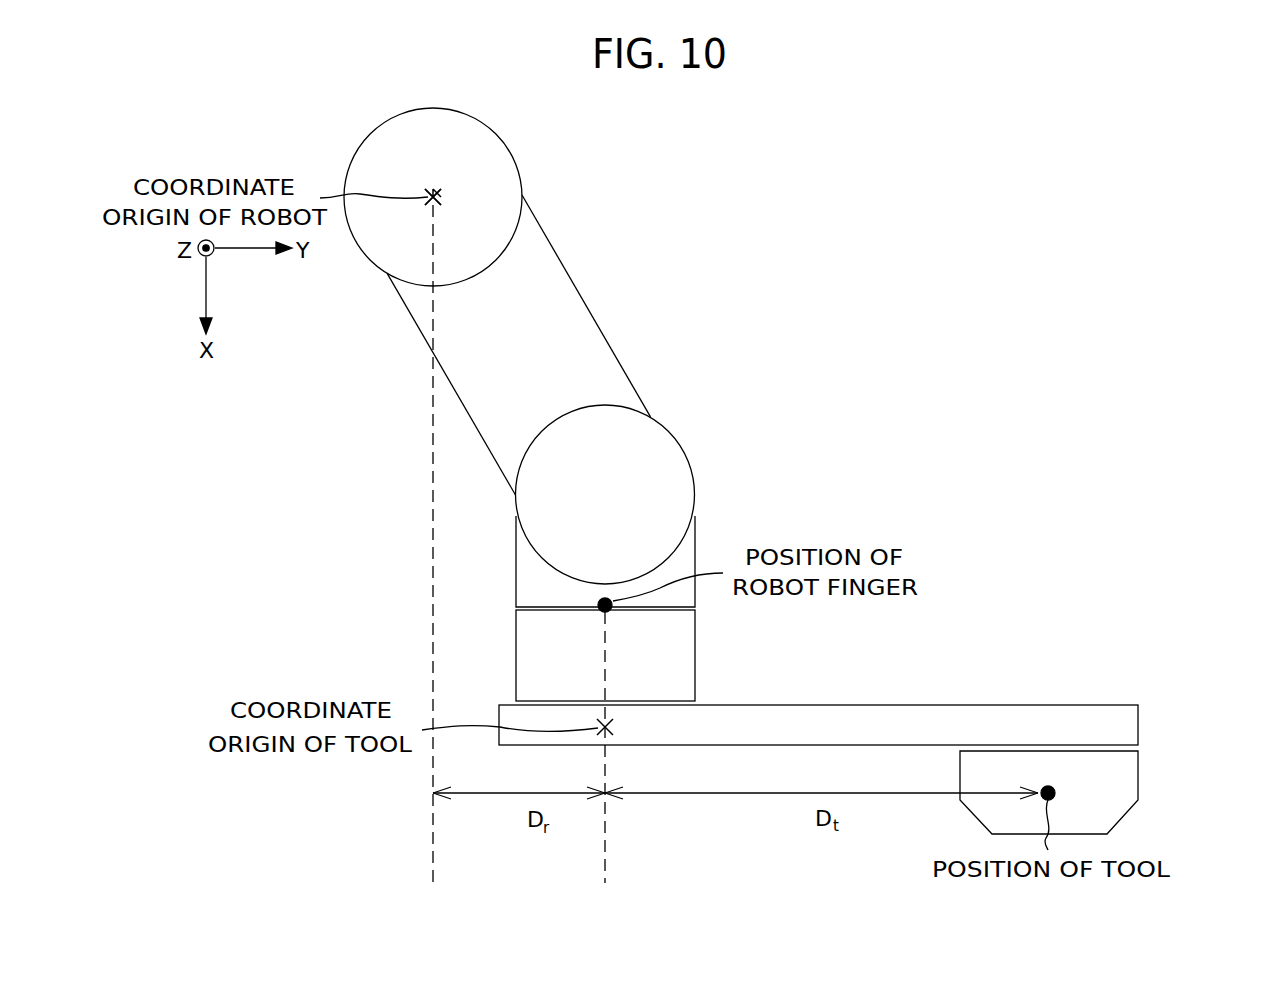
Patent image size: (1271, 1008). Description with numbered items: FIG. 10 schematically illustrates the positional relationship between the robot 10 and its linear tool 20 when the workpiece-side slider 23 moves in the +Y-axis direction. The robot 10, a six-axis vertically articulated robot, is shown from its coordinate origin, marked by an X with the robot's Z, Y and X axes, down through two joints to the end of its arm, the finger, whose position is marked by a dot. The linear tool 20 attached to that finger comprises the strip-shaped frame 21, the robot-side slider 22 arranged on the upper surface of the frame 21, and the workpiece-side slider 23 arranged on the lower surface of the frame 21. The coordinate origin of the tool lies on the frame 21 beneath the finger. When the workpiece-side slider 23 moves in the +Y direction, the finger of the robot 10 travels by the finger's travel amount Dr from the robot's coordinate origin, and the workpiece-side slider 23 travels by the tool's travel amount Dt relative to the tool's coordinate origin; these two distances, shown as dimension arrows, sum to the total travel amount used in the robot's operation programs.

The robot 10 is at (577, 190).
The linear tool 20 is at (850, 675).
The frame 21 is at (695, 657).
The robot-side slider 22 is at (837, 705).
The workpiece-side slider 23 is at (1138, 795).